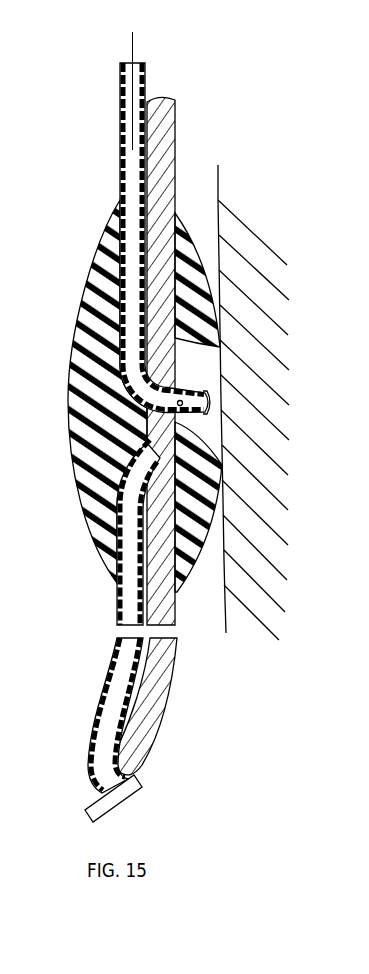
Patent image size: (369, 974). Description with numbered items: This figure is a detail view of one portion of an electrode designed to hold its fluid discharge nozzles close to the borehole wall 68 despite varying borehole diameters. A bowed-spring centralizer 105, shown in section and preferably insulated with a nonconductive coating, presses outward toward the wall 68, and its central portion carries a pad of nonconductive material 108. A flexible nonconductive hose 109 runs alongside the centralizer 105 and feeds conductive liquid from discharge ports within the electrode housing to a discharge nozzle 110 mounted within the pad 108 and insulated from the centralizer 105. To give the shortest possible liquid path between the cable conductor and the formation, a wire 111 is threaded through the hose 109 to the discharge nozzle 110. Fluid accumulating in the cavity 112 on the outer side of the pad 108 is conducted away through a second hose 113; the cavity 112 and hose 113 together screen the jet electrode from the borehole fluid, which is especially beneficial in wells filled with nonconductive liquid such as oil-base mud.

The body wall 68 is at (240, 512).
The bowed-spring centralizer 105 is at (166, 100).
The pad of nonconductive material 108 is at (70, 378).
The flexible nonconductive hose 109 is at (121, 111).
The discharge nozzle 110 is at (203, 397).
The wire 111 is at (133, 37).
The cavity 112 is at (190, 411).
The hose 113 is at (116, 675).